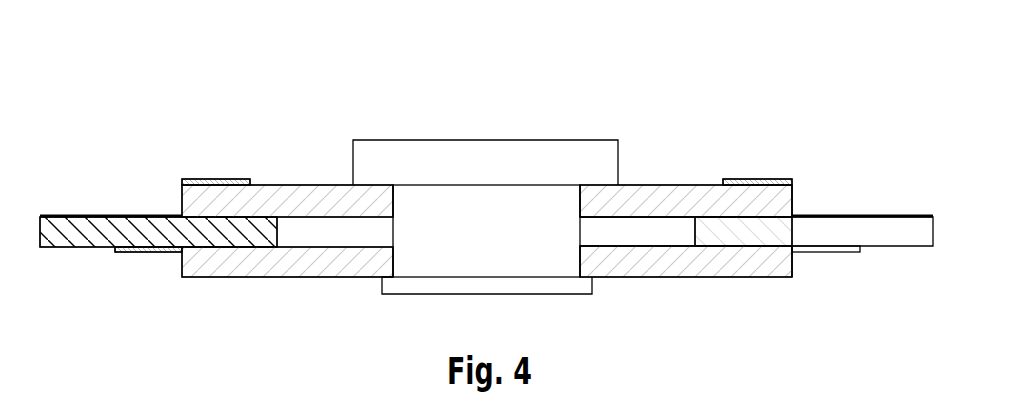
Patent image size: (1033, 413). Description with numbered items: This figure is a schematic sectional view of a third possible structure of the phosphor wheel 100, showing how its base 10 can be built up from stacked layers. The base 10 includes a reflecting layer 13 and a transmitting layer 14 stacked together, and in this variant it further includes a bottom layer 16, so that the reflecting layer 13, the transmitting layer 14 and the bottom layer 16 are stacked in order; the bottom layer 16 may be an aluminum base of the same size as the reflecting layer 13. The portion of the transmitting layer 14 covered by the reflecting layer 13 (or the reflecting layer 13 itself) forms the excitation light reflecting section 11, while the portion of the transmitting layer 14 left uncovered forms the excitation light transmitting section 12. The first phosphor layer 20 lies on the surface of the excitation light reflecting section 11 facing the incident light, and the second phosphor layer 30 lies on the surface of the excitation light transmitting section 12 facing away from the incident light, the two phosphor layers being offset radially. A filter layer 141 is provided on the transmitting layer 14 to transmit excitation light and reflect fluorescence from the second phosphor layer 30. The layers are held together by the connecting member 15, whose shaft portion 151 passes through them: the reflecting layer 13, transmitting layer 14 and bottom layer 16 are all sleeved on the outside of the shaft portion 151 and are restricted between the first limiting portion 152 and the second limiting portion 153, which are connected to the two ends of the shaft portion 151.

The phosphor wheel 100 is at (484, 59).
The base 10 is at (150, 164).
The transmitting layer 14 is at (70, 214).
The reflecting layer 13 is at (182, 207).
The second phosphor layer 30 is at (128, 251).
The excitation light reflecting section 11 is at (308, 173).
The first phosphor layer 20 is at (212, 181).
The bottom layer 16 is at (657, 262).
The connecting member 15 is at (433, 122).
The first limiting portion 152 is at (482, 150).
The shaft portion 151 is at (545, 196).
The second limiting portion 153 is at (482, 282).
The excitation light transmitting section 12 is at (848, 200).
The filter layer 141 is at (893, 215).